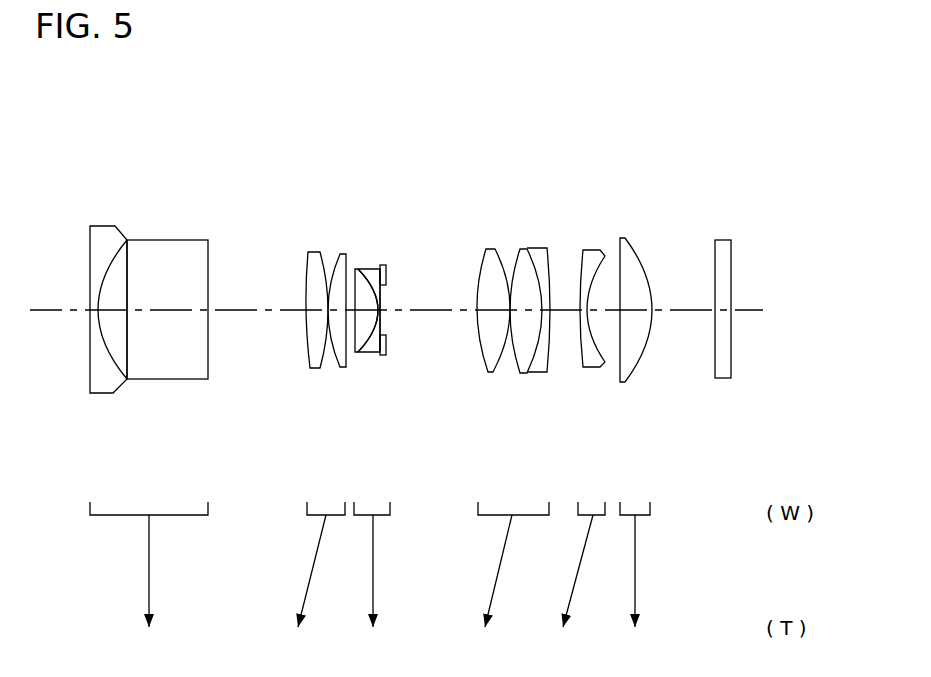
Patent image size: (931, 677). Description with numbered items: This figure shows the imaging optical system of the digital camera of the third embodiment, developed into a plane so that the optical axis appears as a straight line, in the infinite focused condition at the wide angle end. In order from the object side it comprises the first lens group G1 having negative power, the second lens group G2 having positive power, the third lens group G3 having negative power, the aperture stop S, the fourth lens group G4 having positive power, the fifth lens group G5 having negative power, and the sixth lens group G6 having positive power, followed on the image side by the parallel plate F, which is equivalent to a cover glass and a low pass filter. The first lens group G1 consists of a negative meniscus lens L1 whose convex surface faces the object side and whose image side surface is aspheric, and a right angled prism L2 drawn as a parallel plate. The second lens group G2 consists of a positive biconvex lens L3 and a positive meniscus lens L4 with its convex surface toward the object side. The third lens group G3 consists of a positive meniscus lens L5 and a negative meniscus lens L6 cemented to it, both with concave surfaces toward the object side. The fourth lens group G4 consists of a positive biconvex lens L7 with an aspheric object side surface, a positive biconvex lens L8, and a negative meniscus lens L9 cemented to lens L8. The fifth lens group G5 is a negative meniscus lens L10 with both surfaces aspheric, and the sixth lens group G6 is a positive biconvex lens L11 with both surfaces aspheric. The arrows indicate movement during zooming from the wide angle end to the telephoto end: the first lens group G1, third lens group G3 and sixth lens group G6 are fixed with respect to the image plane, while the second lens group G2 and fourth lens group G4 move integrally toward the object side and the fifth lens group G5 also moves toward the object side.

The negative meniscus lens L1 is at (104, 240).
The right angled prism L2 is at (165, 369).
The positive biconvex lens L3 is at (313, 262).
The positive meniscus lens L4 is at (342, 352).
The positive meniscus lens L5 is at (360, 275).
The negative meniscus lens L6 is at (372, 345).
The aperture stop S is at (385, 267).
The positive biconvex lens L7 is at (492, 348).
The positive biconvex lens L8 is at (522, 260).
The negative meniscus lens L9 is at (540, 358).
The negative meniscus lens L10 is at (593, 260).
The positive biconvex lens L11 is at (625, 368).
The parallel plate F is at (725, 247).
The first lens group G1 is at (143, 564).
The second lens group G2 is at (315, 564).
The third lens group G3 is at (381, 564).
The fourth lens group G4 is at (506, 564).
The fifth lens group G5 is at (578, 564).
The sixth lens group G6 is at (644, 564).